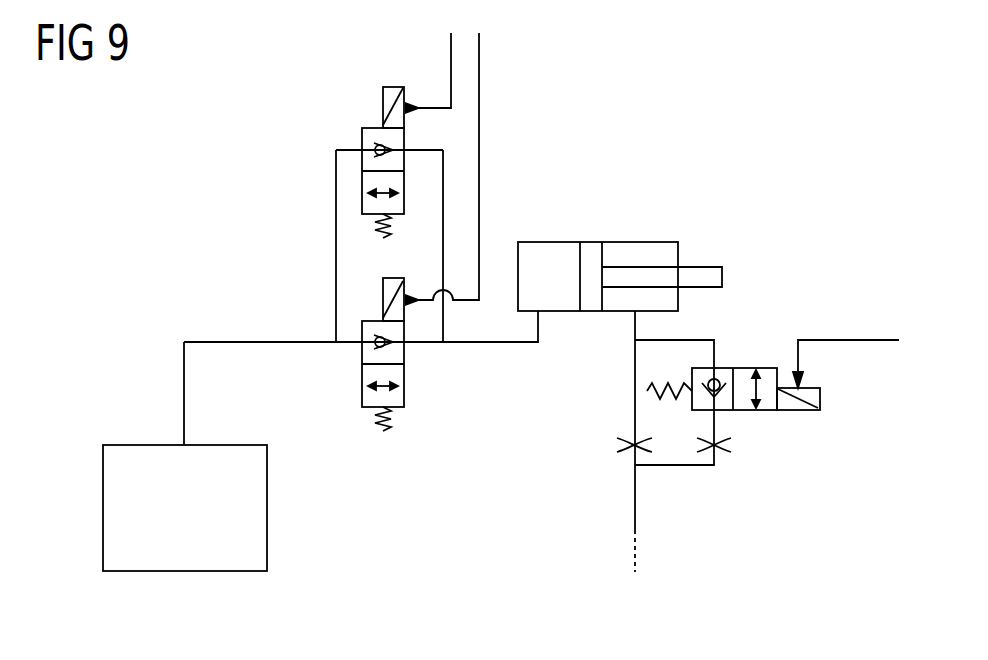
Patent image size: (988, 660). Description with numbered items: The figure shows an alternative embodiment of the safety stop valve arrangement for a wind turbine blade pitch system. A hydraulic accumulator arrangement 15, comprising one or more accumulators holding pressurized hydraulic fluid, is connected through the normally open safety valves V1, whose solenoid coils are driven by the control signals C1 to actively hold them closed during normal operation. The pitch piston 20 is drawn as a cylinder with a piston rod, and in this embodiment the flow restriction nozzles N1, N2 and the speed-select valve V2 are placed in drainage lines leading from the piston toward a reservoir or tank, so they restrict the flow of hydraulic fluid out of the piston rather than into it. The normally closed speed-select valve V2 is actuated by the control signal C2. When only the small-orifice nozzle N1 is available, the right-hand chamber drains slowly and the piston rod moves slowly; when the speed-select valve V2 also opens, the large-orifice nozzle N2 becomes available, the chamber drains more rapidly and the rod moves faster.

The hydraulic accumulator arrangement 15 is at (103, 508).
The pitch piston 20 is at (550, 242).
The safety valve V1 is at (362, 138).
The speed-select valve V2 is at (745, 367).
The solenoid coil actuator signal C1 is at (450, 53).
The solenoid coil actuator signal C2 is at (848, 340).
The flow restriction nozzle N1 is at (623, 440).
The flow restriction nozzle N2 is at (727, 451).